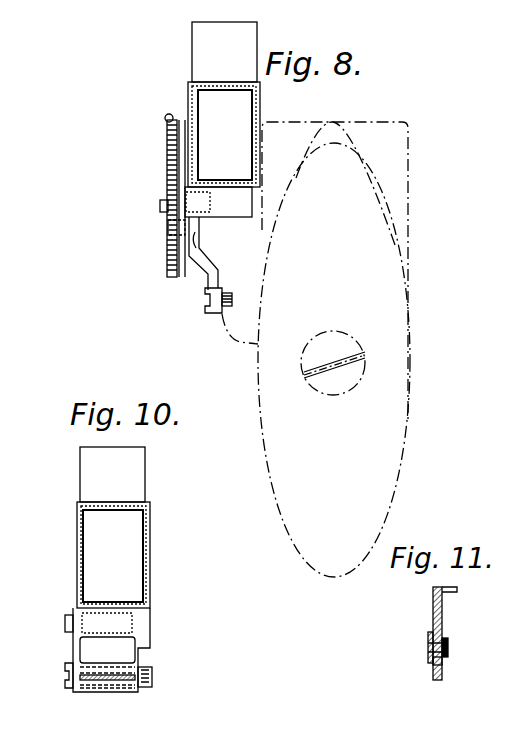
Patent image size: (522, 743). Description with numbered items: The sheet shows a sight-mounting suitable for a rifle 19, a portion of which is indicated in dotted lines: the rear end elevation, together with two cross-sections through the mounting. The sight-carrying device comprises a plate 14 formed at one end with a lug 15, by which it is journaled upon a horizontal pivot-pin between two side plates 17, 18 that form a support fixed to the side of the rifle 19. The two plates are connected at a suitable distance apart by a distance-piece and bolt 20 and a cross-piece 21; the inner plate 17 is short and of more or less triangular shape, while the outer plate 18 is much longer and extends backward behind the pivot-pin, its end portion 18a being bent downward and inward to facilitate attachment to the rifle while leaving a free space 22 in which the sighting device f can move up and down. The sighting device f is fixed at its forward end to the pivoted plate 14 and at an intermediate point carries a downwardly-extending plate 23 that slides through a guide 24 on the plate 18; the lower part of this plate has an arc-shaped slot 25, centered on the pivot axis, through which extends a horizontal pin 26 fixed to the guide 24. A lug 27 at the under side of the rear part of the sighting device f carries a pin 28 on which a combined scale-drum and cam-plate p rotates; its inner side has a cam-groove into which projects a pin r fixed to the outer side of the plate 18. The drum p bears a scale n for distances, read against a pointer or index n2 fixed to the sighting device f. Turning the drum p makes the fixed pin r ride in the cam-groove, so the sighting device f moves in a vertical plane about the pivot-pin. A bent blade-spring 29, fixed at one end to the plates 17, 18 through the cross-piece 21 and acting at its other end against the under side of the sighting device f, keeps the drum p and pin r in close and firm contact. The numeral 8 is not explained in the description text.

In FIG. 8, the sighting device f is at (224, 134).
In FIG. 10, the sighting device f is at (113, 555).
In FIG. 8, the scale for distances n is at (166, 145).
In FIG. 8, the pointer or index n2 is at (167, 119).
In FIG. 8, the pin 28 is at (163, 199).
In FIG. 8, the lug 27 is at (218, 202).
In FIG. 8, the pin r is at (182, 228).
In FIG. 8, the combined scale-drum and cam-plate p is at (162, 253).
In FIG. 8, the side plate 18 is at (198, 241).
In FIG. 10, the side plate 18 is at (75, 642).
In FIG. 11, the side plate 18 is at (432, 658).
In FIG. 8, the end portion 18a is at (215, 310).
In FIG. 8, the rifle 19 is at (316, 349).
In FIG. 10, the plate 14 is at (97, 610).
In FIG. 10, the lug 15 is at (107, 624).
In FIG. 10, the free space 22 is at (107, 650).
In FIG. 10, the distance-piece and bolt 20 is at (98, 670).
In FIG. 10, the cross-piece 21 is at (97, 682).
In FIG. 10, the bent blade-spring 29 is at (123, 683).
In FIG. 10, the clamp 8 is at (73, 687).
In FIG. 10, the side plate 17 is at (152, 638).
In FIG. 11, the downwardly-extending plate 23 is at (442, 617).
In FIG. 11, the horizontal pin 26 is at (430, 647).
In FIG. 11, the guide 24 is at (445, 658).
In FIG. 11, the arc-shaped slot 25 is at (435, 665).